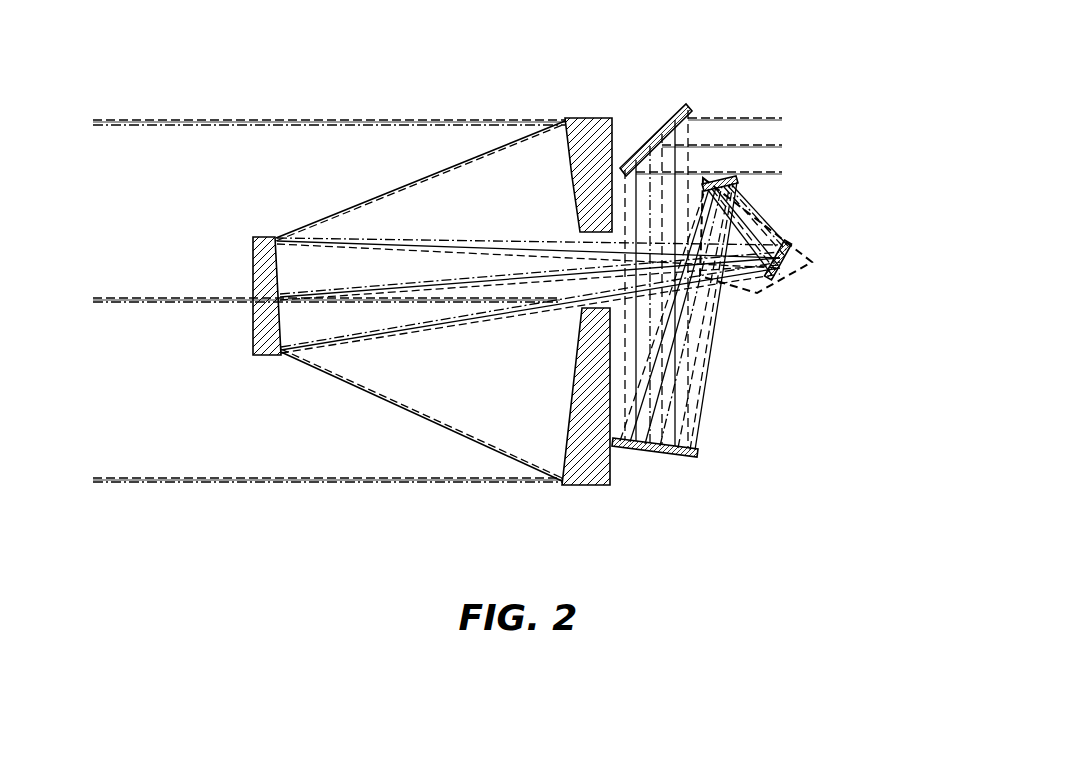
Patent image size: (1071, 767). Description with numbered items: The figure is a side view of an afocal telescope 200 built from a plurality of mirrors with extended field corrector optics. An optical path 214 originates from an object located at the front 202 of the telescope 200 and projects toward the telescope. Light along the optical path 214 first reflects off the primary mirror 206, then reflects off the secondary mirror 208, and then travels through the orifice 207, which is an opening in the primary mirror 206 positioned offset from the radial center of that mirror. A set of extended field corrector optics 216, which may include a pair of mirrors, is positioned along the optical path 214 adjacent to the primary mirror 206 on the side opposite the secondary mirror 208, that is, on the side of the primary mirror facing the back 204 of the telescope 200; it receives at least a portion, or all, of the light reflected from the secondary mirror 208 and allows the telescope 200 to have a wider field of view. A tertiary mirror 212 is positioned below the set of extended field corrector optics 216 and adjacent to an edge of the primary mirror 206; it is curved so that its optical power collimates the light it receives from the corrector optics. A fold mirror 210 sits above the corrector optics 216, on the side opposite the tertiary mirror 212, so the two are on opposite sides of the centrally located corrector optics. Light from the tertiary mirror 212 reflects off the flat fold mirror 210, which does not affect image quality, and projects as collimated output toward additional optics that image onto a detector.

The telescope 200 is at (702, 57).
The front 202 is at (288, 302).
The back 204 is at (768, 217).
The primary mirror 206 is at (583, 172).
The orifice 207 is at (578, 230).
The secondary mirror 208 is at (253, 268).
The fold mirror 210 is at (660, 140).
The tertiary mirror 212 is at (633, 448).
The optical path 214 is at (118, 515).
The set of extended field corrector optics 216 is at (770, 210).